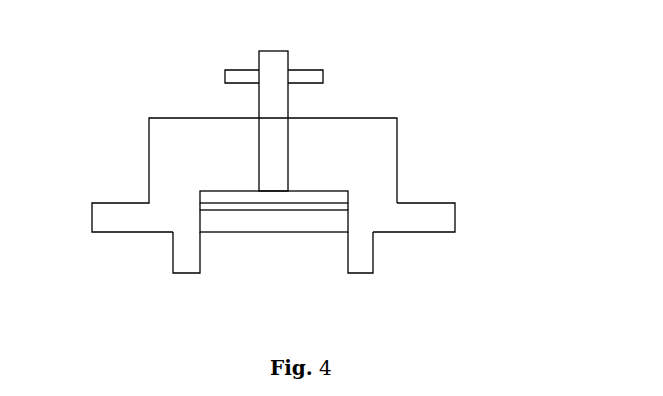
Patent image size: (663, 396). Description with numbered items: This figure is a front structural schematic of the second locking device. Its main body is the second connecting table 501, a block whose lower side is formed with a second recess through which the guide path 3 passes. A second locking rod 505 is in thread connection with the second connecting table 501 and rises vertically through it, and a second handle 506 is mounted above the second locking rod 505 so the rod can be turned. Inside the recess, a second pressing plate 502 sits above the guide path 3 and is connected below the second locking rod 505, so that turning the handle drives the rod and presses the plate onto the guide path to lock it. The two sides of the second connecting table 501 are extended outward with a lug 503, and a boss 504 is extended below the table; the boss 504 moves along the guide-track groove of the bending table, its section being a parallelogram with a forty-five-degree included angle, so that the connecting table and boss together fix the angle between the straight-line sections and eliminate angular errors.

The second connecting table 501 is at (358, 150).
The second pressing plate 502 is at (292, 200).
The lug 503 is at (438, 218).
The boss 504 is at (190, 257).
The second locking rod 505 is at (273, 135).
The second handle 506 is at (305, 78).
The guide path 3 is at (303, 223).